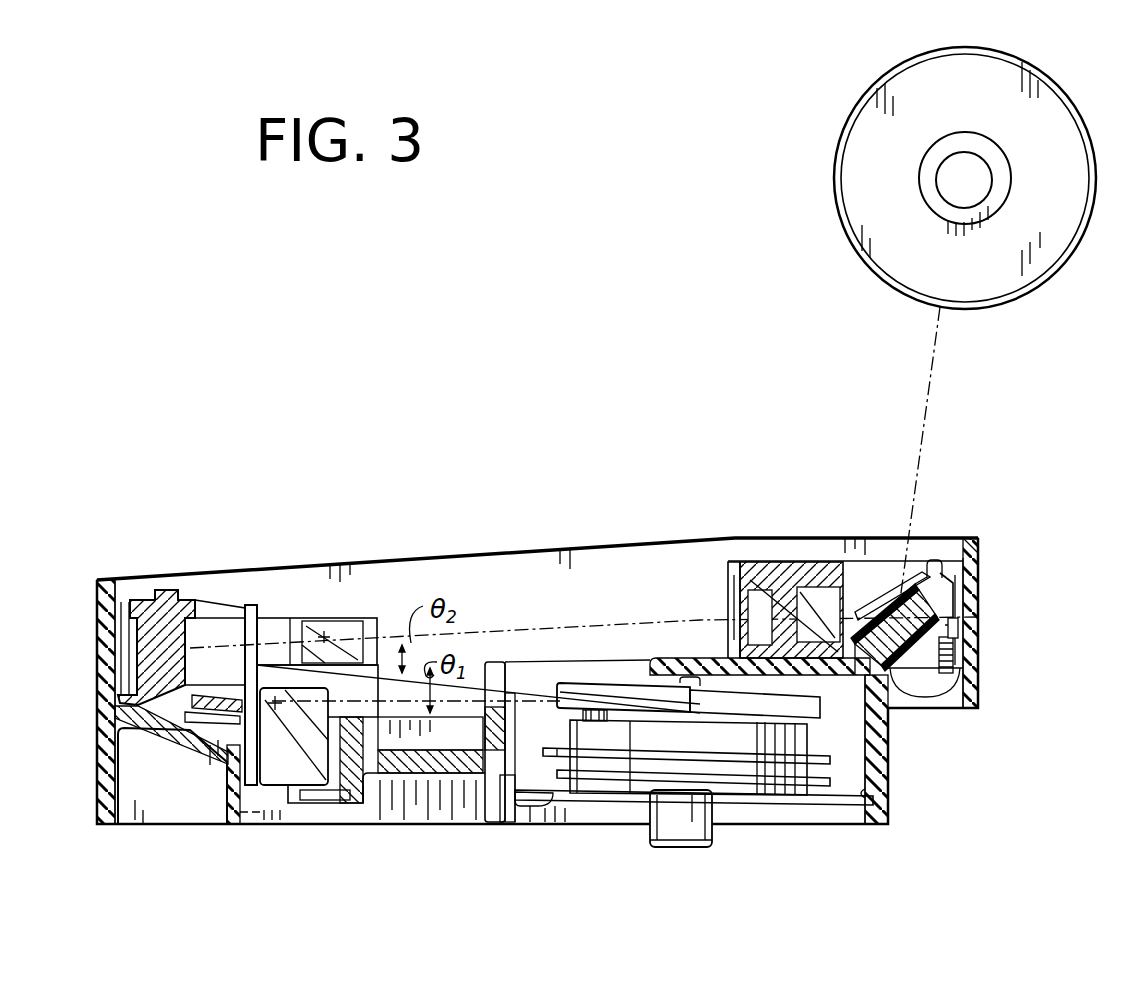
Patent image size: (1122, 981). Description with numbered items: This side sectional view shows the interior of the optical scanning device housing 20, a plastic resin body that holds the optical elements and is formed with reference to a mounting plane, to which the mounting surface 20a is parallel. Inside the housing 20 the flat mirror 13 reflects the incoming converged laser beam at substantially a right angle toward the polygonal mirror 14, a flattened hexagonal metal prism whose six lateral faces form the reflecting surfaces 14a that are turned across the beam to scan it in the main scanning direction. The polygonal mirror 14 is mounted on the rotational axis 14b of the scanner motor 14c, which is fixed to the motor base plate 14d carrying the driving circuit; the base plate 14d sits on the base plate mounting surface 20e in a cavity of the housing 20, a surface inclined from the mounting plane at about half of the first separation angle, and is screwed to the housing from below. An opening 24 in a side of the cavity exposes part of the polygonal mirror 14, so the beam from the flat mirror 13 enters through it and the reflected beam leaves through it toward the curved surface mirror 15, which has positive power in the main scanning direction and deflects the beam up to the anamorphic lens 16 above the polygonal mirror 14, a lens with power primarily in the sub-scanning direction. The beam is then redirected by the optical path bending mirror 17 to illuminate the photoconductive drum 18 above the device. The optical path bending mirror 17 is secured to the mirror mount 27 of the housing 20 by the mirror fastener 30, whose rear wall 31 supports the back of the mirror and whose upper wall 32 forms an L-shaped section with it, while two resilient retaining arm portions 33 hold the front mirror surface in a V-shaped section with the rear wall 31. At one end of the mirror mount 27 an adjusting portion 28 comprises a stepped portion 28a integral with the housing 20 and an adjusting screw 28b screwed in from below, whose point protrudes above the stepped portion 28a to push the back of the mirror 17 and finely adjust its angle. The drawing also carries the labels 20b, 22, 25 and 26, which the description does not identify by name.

The flat mirror 13 is at (293, 765).
The polygonal mirror 14 is at (630, 730).
The reflecting surfaces 14a is at (603, 693).
The rotational axis 14b is at (678, 850).
The scanner motor 14c is at (775, 752).
The motor base plate 14d is at (574, 805).
The curved surface mirror 15 is at (203, 598).
The anamorphic lens 16 is at (780, 587).
The optical path bending mirror 17 is at (897, 702).
The photoconductive drum 18 is at (833, 168).
The housing 20 is at (97, 733).
The mounting surface 20a is at (188, 828).
The top wall 20b is at (602, 545).
The base plate mounting surface 20e is at (883, 763).
The support member 22 is at (363, 806).
The opening 24 is at (498, 674).
The plate 25 is at (247, 604).
The partition wall 26 is at (725, 560).
The mirror mount 27 is at (860, 590).
The adjusting portion 28 is at (963, 652).
The stepped portion 28a is at (965, 673).
The adjusting screw 28b is at (938, 706).
The mirror fastener 30 is at (930, 553).
The rear wall 31 is at (967, 603).
The upper wall 32 is at (964, 548).
The resilient retaining arm portions 33 is at (890, 588).